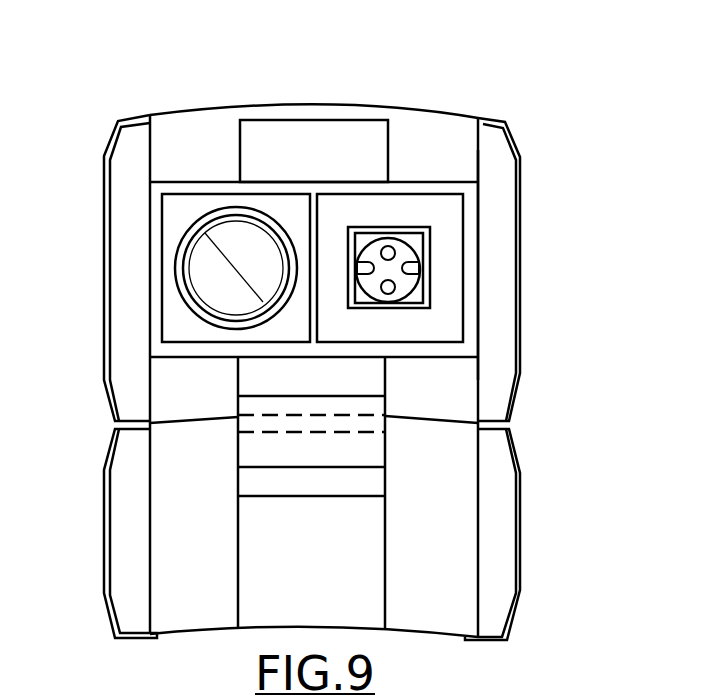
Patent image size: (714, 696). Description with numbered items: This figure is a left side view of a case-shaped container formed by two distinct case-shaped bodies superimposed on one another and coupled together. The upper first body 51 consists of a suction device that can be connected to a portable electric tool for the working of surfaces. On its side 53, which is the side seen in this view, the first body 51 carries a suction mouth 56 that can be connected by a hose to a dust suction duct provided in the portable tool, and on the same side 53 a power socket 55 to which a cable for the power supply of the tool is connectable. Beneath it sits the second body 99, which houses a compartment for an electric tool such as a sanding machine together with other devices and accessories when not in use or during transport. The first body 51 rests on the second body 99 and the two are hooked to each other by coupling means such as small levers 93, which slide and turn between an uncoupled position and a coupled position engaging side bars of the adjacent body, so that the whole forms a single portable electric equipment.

The first body 51 is at (365, 102).
The side 53 is at (502, 210).
The power socket 55 is at (388, 270).
The suction mouth 56 is at (215, 278).
The small levers 93 is at (280, 450).
The second body 99 is at (522, 533).